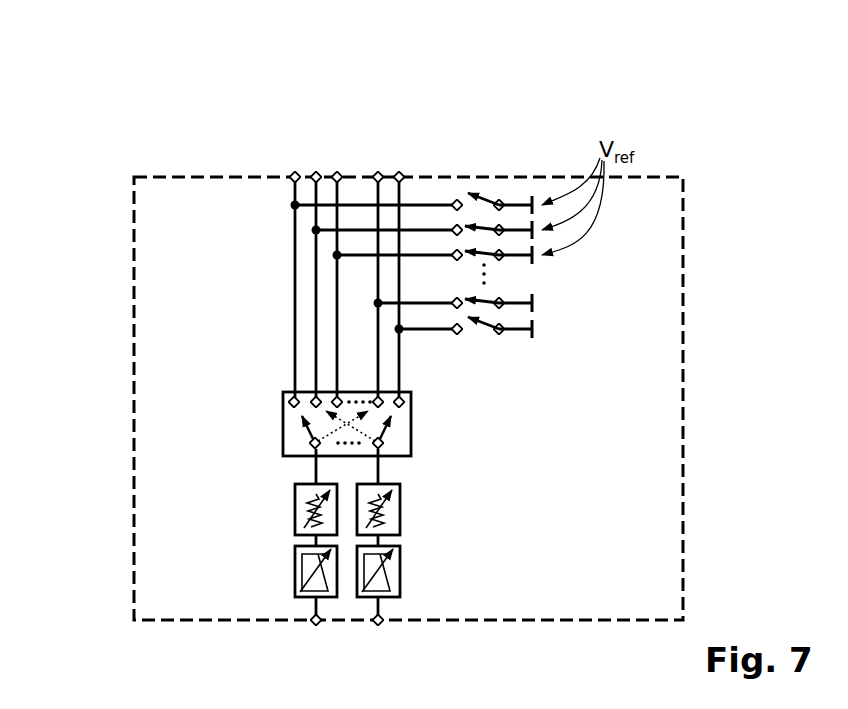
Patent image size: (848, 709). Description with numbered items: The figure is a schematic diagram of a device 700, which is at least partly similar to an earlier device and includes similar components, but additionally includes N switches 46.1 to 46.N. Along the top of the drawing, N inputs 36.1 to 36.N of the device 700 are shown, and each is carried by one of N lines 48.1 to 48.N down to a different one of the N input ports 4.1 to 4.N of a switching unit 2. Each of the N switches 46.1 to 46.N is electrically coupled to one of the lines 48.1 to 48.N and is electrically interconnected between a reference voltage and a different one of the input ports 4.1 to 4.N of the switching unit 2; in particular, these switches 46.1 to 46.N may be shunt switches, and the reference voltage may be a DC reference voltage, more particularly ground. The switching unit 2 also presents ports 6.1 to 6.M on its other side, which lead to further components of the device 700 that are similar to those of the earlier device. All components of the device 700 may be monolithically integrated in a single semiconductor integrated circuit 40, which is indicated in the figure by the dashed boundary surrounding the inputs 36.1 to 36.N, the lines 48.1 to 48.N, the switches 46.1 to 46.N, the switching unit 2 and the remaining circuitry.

The device 700 is at (125, 55).
The single semiconductor integrated circuit 40 is at (683, 455).
The first input of the device 36.1 is at (294, 176).
The N-th input of the device 36.N is at (399, 176).
The first line 48.1 is at (295, 247).
The N-th line 48.N is at (399, 281).
The first switch 46.1 is at (486, 192).
The N-th switch 46.N is at (491, 342).
The switching unit 2 is at (411, 423).
The first input port of the switching unit 4.1 is at (289, 396).
The N-th input port of the switching unit 4.N is at (412, 396).
The first port of the switching unit 6.1 is at (313, 447).
The M-th port of the switching unit 6.M is at (381, 447).